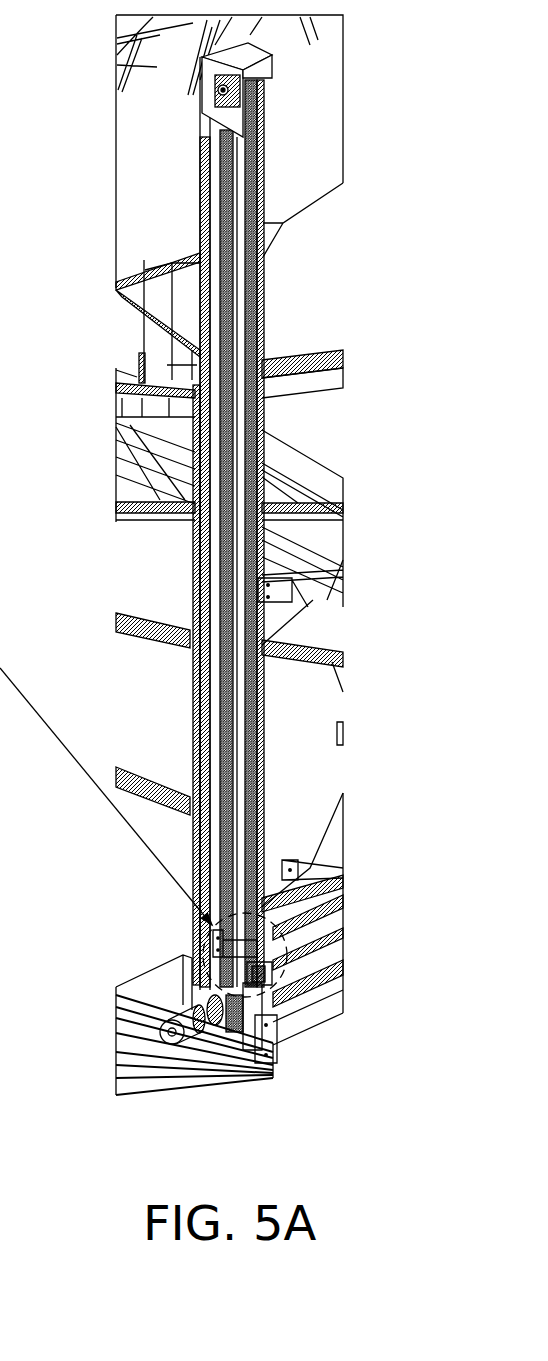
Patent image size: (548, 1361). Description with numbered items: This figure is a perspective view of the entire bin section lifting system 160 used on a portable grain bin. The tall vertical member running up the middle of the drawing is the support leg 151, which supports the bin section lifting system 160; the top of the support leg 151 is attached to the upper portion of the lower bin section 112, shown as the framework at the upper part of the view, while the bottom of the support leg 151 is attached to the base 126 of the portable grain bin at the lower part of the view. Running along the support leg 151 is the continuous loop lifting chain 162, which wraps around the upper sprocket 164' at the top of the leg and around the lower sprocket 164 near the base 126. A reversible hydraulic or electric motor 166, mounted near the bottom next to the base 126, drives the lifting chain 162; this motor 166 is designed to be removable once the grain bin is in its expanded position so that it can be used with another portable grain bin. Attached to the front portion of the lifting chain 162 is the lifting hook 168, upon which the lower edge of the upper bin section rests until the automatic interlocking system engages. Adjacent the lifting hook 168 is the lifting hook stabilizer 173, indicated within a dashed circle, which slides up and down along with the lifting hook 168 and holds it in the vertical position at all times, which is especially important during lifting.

The lower bin section 112 is at (320, 148).
The base 126 is at (312, 1022).
The support leg 151 is at (207, 554).
The bin section lifting system 160 is at (368, 558).
The continuous loop lifting chain 162 is at (262, 260).
The lower sprocket 164 is at (242, 1069).
The upper sprocket 164' is at (321, 90).
The motor 166 is at (182, 1044).
The lifting hook 168 is at (275, 975).
The lifting hook stabilizer 173 is at (262, 953).